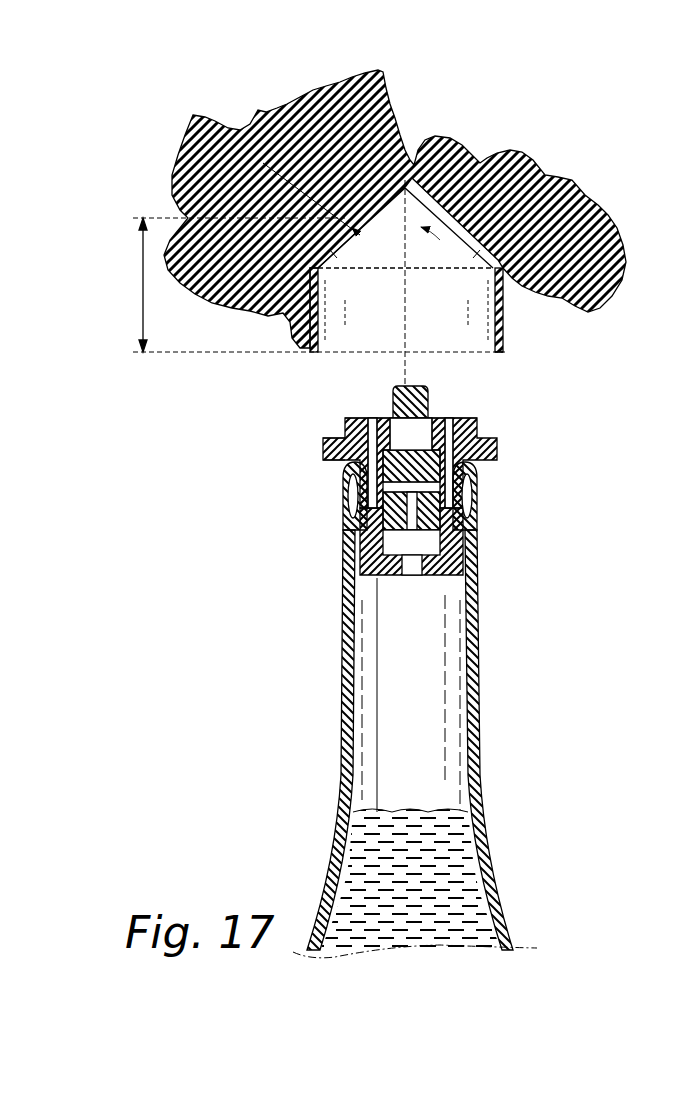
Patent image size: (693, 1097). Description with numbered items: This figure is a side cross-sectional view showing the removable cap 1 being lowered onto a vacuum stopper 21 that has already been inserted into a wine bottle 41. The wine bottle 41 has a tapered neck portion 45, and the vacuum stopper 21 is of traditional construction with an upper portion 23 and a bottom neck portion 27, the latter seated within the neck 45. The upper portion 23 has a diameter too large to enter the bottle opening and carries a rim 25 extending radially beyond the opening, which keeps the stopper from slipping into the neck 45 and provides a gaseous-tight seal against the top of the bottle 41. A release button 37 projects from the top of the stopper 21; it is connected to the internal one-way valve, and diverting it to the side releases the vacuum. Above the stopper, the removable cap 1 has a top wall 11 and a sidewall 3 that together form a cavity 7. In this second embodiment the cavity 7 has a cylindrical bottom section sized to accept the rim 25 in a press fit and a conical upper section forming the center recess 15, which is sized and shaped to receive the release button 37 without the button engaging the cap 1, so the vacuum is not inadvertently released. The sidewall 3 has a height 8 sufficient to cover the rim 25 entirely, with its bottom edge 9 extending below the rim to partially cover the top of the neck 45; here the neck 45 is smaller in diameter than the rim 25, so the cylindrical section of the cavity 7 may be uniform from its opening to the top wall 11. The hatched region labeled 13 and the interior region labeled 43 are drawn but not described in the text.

The removable cap 1 is at (558, 106).
The sidewall 3 is at (503, 318).
The cavity 7 is at (357, 322).
The height 8 is at (143, 292).
The bottom edge 9 is at (503, 353).
The top wall 11 is at (263, 163).
The hand body 13 is at (330, 130).
The center recess 15 is at (481, 180).
The vacuum stopper 21 is at (510, 447).
The upper portion 23 is at (345, 430).
The rim 25 is at (323, 452).
The bottom neck portion 27 is at (465, 500).
The release button 37 is at (430, 402).
The wine bottle 41 is at (490, 856).
The neck interior 43 is at (428, 745).
The neck portion 45 is at (478, 683).